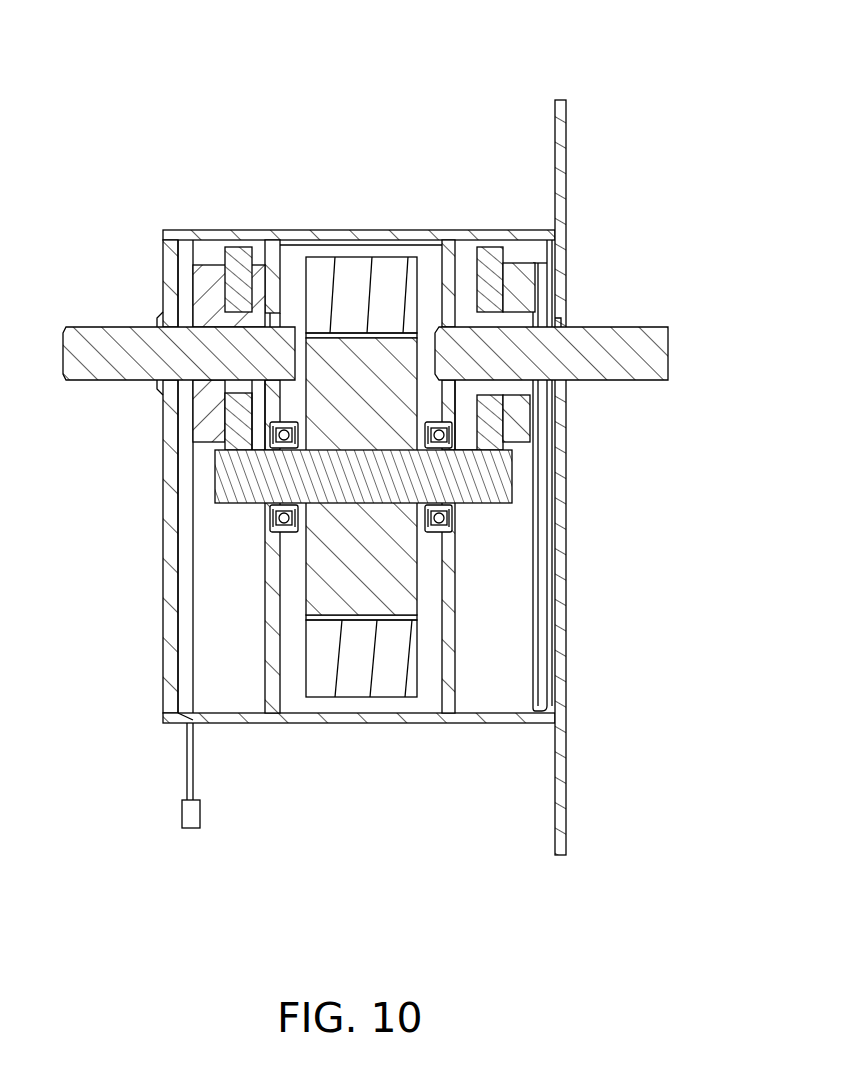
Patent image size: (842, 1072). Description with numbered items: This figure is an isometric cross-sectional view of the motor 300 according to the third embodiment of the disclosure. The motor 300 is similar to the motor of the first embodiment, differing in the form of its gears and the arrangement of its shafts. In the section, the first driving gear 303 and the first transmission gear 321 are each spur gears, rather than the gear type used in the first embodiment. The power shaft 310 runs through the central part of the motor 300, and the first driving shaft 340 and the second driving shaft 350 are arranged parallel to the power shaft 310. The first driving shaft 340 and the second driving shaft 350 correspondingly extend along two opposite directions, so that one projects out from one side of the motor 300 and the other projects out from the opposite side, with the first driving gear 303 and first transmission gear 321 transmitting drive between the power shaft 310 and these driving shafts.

The motor 300 is at (345, 52).
The first driving gear 303 is at (242, 482).
The power shaft 310 is at (358, 485).
The first transmission gear 321 is at (234, 248).
The first driving shaft 340 is at (108, 337).
The second driving shaft 350 is at (605, 363).